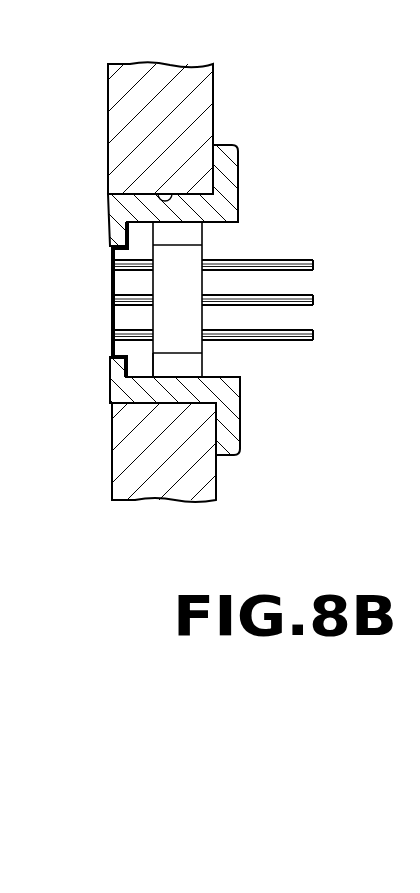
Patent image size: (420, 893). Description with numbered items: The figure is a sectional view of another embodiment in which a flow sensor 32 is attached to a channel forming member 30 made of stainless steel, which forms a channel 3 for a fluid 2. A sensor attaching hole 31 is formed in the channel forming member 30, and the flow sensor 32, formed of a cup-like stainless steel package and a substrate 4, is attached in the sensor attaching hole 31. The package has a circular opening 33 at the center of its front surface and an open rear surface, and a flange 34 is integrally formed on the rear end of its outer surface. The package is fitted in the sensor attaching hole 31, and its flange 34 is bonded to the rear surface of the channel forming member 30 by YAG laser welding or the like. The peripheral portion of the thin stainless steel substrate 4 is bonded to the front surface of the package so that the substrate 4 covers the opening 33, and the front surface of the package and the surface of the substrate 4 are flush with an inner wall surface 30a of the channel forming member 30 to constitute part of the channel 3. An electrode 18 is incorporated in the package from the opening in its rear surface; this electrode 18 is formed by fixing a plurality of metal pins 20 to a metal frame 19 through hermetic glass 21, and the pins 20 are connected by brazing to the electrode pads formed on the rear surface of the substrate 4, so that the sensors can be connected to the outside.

The fluid 2 is at (77, 324).
The channel 3 is at (97, 307).
The substrate 4 is at (108, 240).
The electrode 18 is at (232, 348).
The metal frame 19 is at (187, 367).
The metal pins 20 is at (299, 330).
The hermetic glass 21 is at (197, 257).
The channel forming member 30 is at (203, 97).
The inner wall surface 30a is at (112, 458).
The sensor attaching hole 31 is at (165, 193).
The flow sensor 32 is at (98, 399).
The opening 33 is at (118, 360).
The flange 34 is at (240, 173).